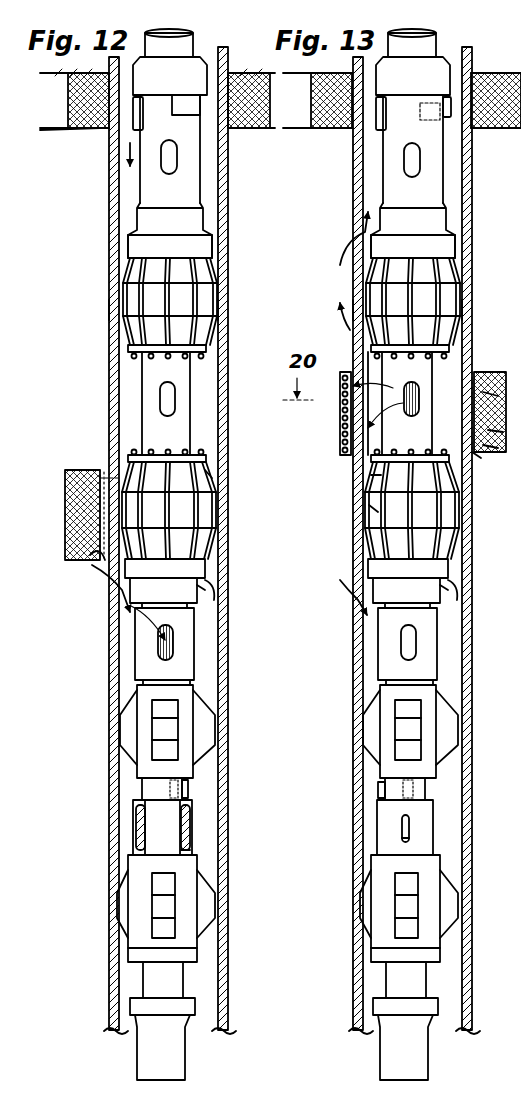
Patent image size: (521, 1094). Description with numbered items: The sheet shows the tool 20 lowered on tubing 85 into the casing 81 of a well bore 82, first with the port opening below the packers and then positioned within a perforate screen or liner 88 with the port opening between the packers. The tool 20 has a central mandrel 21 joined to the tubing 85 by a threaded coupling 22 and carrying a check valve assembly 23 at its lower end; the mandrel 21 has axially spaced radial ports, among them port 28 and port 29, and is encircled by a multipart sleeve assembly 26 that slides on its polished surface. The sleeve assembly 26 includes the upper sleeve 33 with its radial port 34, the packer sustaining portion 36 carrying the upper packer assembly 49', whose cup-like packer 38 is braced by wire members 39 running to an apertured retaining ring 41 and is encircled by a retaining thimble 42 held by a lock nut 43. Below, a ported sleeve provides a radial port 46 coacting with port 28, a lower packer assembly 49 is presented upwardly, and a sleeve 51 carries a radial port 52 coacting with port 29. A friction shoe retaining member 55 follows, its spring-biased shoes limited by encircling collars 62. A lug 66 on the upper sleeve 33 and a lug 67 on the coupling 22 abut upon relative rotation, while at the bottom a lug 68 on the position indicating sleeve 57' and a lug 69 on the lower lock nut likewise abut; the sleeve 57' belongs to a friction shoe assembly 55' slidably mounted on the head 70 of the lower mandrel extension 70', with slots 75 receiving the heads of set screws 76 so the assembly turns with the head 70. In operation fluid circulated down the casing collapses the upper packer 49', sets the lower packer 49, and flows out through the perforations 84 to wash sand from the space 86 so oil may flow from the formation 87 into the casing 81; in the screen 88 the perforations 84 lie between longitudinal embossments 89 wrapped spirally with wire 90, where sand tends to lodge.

In FIG. 12, the tool 20 is at (140, 375).
In FIG. 13, the tool 20 is at (446, 398).
In FIG. 12, the mandrel 21 is at (185, 978).
In FIG. 13, the mandrel 21 is at (445, 991).
In FIG. 12, the threaded coupling 22 is at (195, 72).
In FIG. 13, the threaded coupling 22 is at (448, 72).
In FIG. 12, the check valve assembly 23 is at (200, 1025).
In FIG. 13, the check valve assembly 23 is at (447, 1047).
In FIG. 12, the multipart sleeve assembly 26 is at (200, 248).
In FIG. 13, the multipart sleeve assembly 26 is at (441, 253).
In FIG. 13, the radial port 28 is at (342, 403).
In FIG. 12, the radial port 29 is at (214, 635).
In FIG. 12, the upper sleeve 33 is at (200, 172).
In FIG. 13, the upper sleeve 33 is at (446, 176).
In FIG. 12, the radial port 34 is at (178, 158).
In FIG. 13, the radial port 34 is at (462, 160).
In FIG. 12, the packer sustaining portion 36 is at (118, 474).
In FIG. 13, the packer sustaining portion 36 is at (335, 478).
In FIG. 12, the packer 38 is at (205, 515).
In FIG. 13, the packer 38 is at (441, 510).
In FIG. 12, the wire members 39 is at (205, 472).
In FIG. 13, the wire members 39 is at (334, 501).
In FIG. 12, the apertured retaining ring 41 is at (130, 458).
In FIG. 13, the apertured retaining ring 41 is at (369, 455).
In FIG. 12, the retaining thimble 42 is at (205, 572).
In FIG. 13, the retaining thimble 42 is at (442, 581).
In FIG. 12, the lock nut 43 is at (212, 612).
In FIG. 13, the lock nut 43 is at (478, 613).
In FIG. 12, the radial port 46 is at (158, 402).
In FIG. 13, the radial port 46 is at (355, 412).
In FIG. 12, the lower packer assembly 49 is at (240, 598).
In FIG. 13, the lower packer assembly 49 is at (443, 439).
In FIG. 12, the upper packer assembly 49' is at (204, 308).
In FIG. 12, the sleeve 51 is at (194, 670).
In FIG. 13, the sleeve 51 is at (447, 647).
In FIG. 12, the radial port 52 is at (175, 650).
In FIG. 13, the radial port 52 is at (459, 647).
In FIG. 12, the friction shoe retaining member 55 is at (197, 731).
In FIG. 13, the friction shoe retaining member 55 is at (440, 731).
In FIG. 12, the friction shoe assembly 55' is at (196, 908).
In FIG. 13, the friction shoe assembly 55' is at (440, 908).
In FIG. 12, the position indicating sleeve 57' is at (204, 849).
In FIG. 13, the position indicating sleeve 57' is at (445, 822).
In FIG. 12, the encircling collars 62 is at (185, 738).
In FIG. 13, the encircling collars 62 is at (456, 730).
In FIG. 12, the lug 66 is at (135, 110).
In FIG. 13, the lug 66 is at (333, 112).
In FIG. 12, the lug 67 is at (193, 110).
In FIG. 13, the lug 67 is at (470, 108).
In FIG. 12, the lug 68 is at (190, 792).
In FIG. 13, the lug 68 is at (387, 791).
In FIG. 12, the lug 69 is at (195, 772).
In FIG. 13, the lug 69 is at (452, 789).
In FIG. 12, the head 70 is at (109, 822).
In FIG. 13, the head 70 is at (373, 827).
In FIG. 12, the lower mandrel extension 70' is at (203, 980).
In FIG. 13, the lower mandrel extension 70' is at (448, 983).
In FIG. 12, the slots 75 is at (190, 820).
In FIG. 13, the slots 75 is at (451, 826).
In FIG. 12, the set screws 76 is at (190, 838).
In FIG. 13, the set screws 76 is at (459, 837).
In FIG. 12, the casing 81 is at (109, 603).
In FIG. 13, the casing 81 is at (429, 540).
In FIG. 12, the well bore 82 is at (100, 520).
In FIG. 13, the well bore 82 is at (492, 403).
In FIG. 12, the perforations 84 is at (109, 635).
In FIG. 13, the perforations 84 is at (433, 397).
In FIG. 12, the tubing 85 is at (180, 40).
In FIG. 13, the tubing 85 is at (441, 43).
In FIG. 12, the space 86 is at (90, 552).
In FIG. 13, the space 86 is at (502, 386).
In FIG. 12, the formation 87 is at (95, 124).
In FIG. 13, the formation 87 is at (318, 134).
In FIG. 13, the screen or liner 88 is at (492, 465).
In FIG. 13, the embossments 89 is at (502, 452).
In FIG. 13, the wire 90 is at (504, 437).